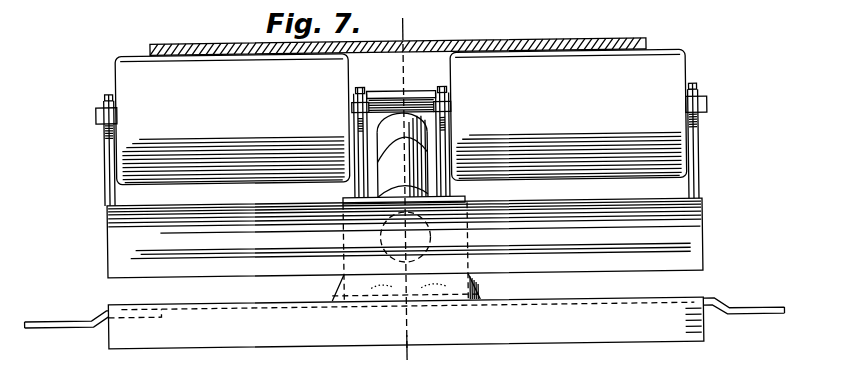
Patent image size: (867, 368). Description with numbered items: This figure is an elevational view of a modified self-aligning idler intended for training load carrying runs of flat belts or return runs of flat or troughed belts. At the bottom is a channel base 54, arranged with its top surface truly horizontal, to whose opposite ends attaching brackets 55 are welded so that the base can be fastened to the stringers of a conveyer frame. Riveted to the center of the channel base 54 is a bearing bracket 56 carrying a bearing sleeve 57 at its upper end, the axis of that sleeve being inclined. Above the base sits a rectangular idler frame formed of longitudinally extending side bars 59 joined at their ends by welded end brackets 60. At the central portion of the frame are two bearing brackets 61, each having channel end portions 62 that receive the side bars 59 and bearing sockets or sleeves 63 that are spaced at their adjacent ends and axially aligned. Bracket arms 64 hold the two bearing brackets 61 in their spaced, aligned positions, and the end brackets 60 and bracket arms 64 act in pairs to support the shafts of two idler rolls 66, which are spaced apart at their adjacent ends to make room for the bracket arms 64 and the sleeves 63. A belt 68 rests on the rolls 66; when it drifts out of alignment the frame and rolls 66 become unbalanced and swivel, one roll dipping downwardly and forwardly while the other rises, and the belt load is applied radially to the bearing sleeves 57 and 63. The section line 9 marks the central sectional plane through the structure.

The section line 9- 9 is at (405, 27).
The channel base 54 is at (567, 323).
The attaching brackets 55 is at (55, 322).
The bearing bracket 56 is at (478, 290).
The bearing sleeve 57 is at (402, 157).
The side bars 59 is at (228, 258).
The end brackets 60 is at (105, 184).
The bearing brackets 61 is at (380, 108).
The channel end portions 62 is at (343, 276).
The bearing sockets or sleeves 63 is at (401, 122).
The bracket arms 64 is at (351, 136).
The idler rolls 66 is at (401, 116).
The belt 68 is at (513, 41).